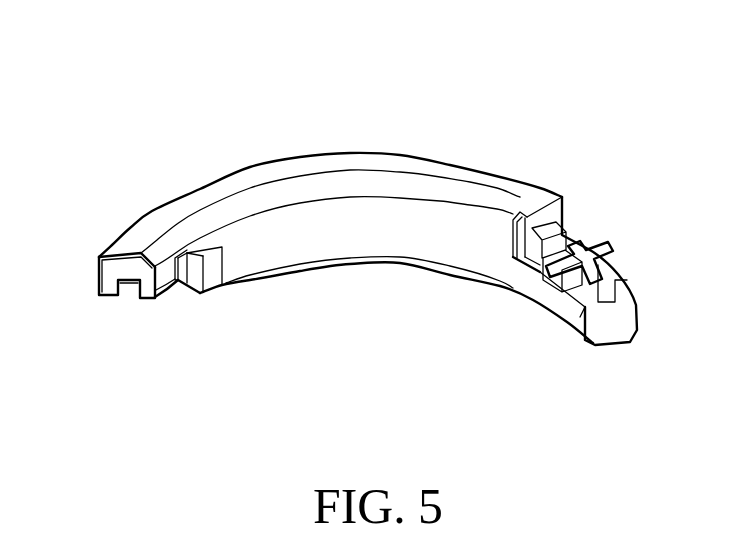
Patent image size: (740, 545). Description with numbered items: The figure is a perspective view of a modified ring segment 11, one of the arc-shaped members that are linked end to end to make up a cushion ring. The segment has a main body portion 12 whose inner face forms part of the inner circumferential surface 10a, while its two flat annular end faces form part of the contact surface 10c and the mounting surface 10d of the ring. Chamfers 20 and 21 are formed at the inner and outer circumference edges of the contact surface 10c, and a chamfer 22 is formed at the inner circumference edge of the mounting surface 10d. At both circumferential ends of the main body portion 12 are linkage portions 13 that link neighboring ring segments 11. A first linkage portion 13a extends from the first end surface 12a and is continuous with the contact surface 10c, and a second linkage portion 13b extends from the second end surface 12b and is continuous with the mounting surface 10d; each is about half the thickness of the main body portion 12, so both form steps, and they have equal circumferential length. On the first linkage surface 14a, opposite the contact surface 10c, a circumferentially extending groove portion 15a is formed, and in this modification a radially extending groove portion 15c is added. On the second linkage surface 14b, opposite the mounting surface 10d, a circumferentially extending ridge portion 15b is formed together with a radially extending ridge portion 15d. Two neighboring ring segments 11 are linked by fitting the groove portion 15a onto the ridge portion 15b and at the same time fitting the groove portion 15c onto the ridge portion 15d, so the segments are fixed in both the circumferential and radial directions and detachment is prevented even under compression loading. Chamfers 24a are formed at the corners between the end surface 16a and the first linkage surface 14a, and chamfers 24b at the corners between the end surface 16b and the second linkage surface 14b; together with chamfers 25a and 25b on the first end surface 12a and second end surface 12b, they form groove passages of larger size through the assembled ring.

The ring segment 11 is at (490, 103).
The inner circumferential surface 10a is at (415, 247).
The contact surface 10c is at (335, 152).
The mounting surface 10d is at (337, 268).
The main body portion 12 is at (397, 215).
The first end surface 12a is at (170, 277).
The second end surface 12b is at (553, 213).
The linkage portion 13 is at (100, 319).
The first linkage portion 13a is at (150, 222).
The second linkage portion 13b is at (537, 290).
The first linkage surface 14a is at (170, 287).
The second linkage surface 14b is at (620, 288).
The groove portion 15a is at (127, 297).
The ridge portion 15b is at (597, 270).
The groove portion 15c is at (173, 284).
The ridge portion 15d is at (575, 240).
The end surface 16a is at (110, 277).
The end surface 16b is at (623, 317).
The chamfer 20 is at (252, 200).
The chamfer 21 is at (108, 253).
The chamfer 22 is at (377, 267).
The chamfer 24a is at (205, 255).
The chamfer 24b is at (533, 263).
The chamfer 25a is at (217, 265).
The chamfer 25b is at (520, 212).